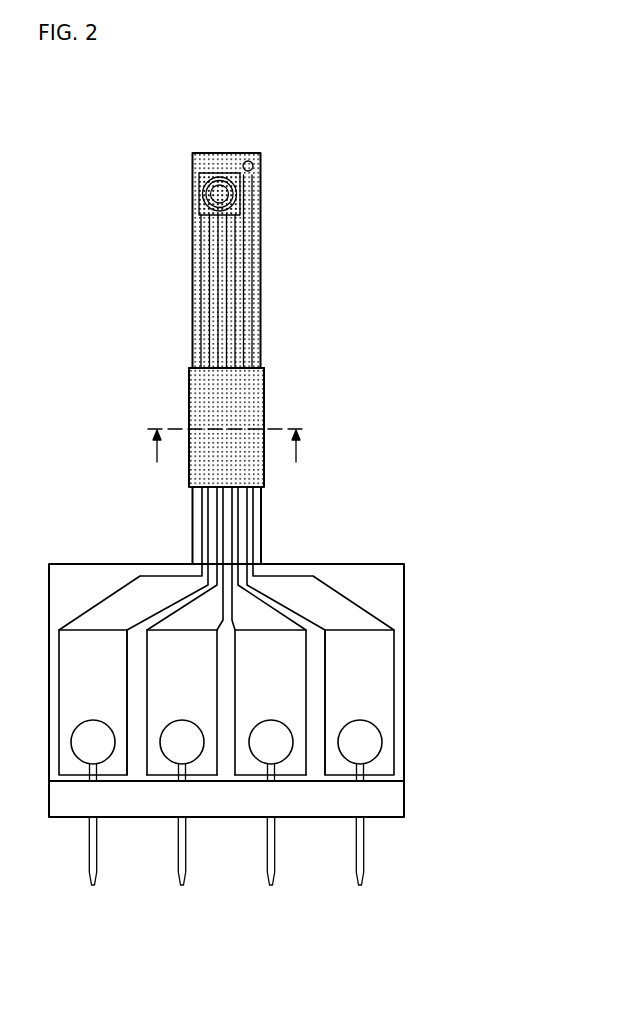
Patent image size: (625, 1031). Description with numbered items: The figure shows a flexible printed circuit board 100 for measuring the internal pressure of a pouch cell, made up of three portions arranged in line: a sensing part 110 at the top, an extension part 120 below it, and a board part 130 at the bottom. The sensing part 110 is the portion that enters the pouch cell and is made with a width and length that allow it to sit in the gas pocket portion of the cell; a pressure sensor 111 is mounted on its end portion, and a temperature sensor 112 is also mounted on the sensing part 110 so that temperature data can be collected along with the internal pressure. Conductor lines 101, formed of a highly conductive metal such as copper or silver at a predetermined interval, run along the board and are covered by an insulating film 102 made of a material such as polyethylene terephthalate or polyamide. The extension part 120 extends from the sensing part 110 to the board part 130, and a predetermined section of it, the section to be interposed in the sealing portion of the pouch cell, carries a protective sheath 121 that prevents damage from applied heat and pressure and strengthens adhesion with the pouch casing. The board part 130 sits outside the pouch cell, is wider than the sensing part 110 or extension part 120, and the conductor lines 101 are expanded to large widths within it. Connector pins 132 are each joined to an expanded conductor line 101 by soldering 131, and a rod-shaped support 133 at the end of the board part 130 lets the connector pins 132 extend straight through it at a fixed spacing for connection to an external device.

The flexible printed circuit board 100 is at (136, 100).
The sensing part 110 is at (264, 280).
The pressure sensor 111 is at (200, 185).
The temperature sensor 112 is at (253, 166).
The extension part 120 is at (268, 390).
The protective sheath 121 is at (197, 382).
The conductor lines 101 is at (249, 508).
The insulating film 102 is at (256, 540).
The board part 130 is at (407, 653).
The soldering 131 is at (363, 742).
The connector pins 132 is at (365, 848).
The support 133 is at (383, 798).